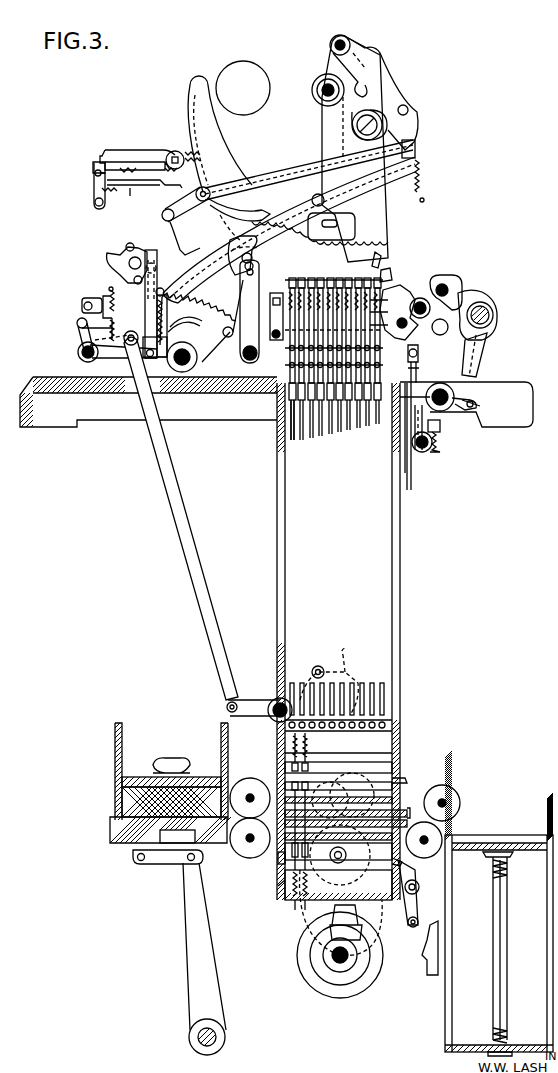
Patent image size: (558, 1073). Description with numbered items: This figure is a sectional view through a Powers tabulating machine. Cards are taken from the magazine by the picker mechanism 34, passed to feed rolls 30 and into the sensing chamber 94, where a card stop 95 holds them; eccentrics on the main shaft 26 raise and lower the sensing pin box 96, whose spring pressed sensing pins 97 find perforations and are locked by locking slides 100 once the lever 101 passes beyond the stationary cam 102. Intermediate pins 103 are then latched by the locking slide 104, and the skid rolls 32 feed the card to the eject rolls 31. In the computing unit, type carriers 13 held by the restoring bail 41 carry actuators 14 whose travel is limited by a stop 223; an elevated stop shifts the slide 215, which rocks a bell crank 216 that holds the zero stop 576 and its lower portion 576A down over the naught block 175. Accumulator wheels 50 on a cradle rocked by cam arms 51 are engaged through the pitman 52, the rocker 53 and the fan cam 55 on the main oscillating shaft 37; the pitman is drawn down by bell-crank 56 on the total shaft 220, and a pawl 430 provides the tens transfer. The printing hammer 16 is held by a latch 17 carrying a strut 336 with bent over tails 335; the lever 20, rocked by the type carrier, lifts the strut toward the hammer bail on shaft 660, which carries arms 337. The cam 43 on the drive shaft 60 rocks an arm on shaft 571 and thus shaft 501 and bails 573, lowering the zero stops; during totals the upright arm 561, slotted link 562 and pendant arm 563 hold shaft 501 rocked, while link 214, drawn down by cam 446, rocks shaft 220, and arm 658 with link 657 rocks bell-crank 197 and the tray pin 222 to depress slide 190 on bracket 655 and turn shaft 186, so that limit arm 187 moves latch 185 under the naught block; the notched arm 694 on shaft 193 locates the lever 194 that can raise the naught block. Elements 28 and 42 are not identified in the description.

The type carriers 13 is at (193, 88).
The supplemental gear sector 14 is at (375, 240).
The printing hammer 16 is at (130, 152).
The latch 17 is at (94, 196).
The lever 20 is at (232, 212).
The main shaft 26 is at (340, 963).
The shaft 28 is at (478, 362).
The feed rolls 30 is at (258, 780).
The eject rolls 31 is at (458, 810).
The skid rolls 32 is at (380, 935).
The picker mechanism 34 is at (192, 940).
The main oscillating shaft 37 is at (180, 372).
The restoring bail 41 is at (315, 198).
The bar 42 is at (290, 170).
The cam 43 is at (470, 295).
The accumulator wheels 50 is at (258, 280).
The cam arms 51 is at (240, 308).
The doubly notched pitman 52 is at (163, 270).
The rocker 53 is at (126, 248).
The fan cam 55 is at (155, 296).
The bell-crank 56 is at (125, 360).
The drive shaft 60 is at (494, 313).
The sensing chamber 94 is at (280, 840).
The card stop 95 is at (412, 808).
The sensing pin box 96 is at (280, 890).
The sensing pins 97 is at (294, 910).
The locking slides 100 is at (280, 862).
The lever 101 is at (405, 895).
The stationary cam 102 is at (428, 962).
The intermediate pins 103 is at (308, 746).
The locking slide 104 is at (405, 780).
The naught block 175 is at (369, 414).
The latch 185 is at (440, 446).
The shaft 186 is at (422, 454).
The limit arm 187 is at (441, 428).
The slide 190 is at (402, 458).
The shaft 193 is at (442, 405).
The lever 194 is at (470, 408).
The bell-crank 197 is at (420, 356).
The link 214 is at (203, 587).
The slide 215 is at (274, 320).
The bell crank 216 is at (395, 298).
The total shaft 220 is at (78, 353).
The tray pin 222 is at (416, 374).
The stop 223 is at (382, 265).
The bent over tails 335 is at (147, 186).
The strut 336 is at (93, 167).
The arms 337 is at (173, 152).
The pawl 430 is at (192, 218).
The cam 446 is at (343, 660).
The transverse rock shaft 501 is at (446, 287).
The upright arm 561 is at (82, 304).
The slotted link 562 is at (108, 292).
The pendant arm 563 is at (432, 335).
The transverse shaft 571 is at (460, 280).
The bails 573 is at (423, 298).
The zero stop 576 is at (392, 275).
The lower portion 576A is at (359, 412).
The bracket 655 is at (418, 442).
The link 657 is at (116, 325).
The arm 658 is at (77, 324).
The shaft 660 is at (185, 150).
The arm 694 is at (455, 392).